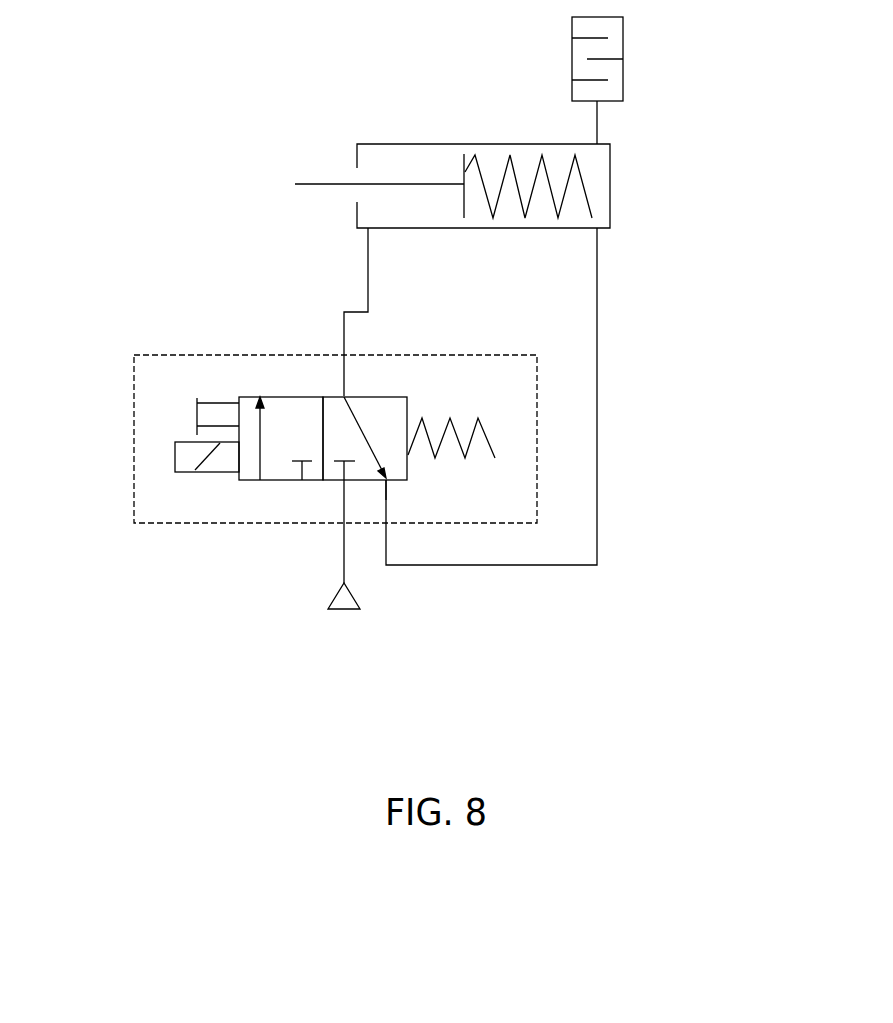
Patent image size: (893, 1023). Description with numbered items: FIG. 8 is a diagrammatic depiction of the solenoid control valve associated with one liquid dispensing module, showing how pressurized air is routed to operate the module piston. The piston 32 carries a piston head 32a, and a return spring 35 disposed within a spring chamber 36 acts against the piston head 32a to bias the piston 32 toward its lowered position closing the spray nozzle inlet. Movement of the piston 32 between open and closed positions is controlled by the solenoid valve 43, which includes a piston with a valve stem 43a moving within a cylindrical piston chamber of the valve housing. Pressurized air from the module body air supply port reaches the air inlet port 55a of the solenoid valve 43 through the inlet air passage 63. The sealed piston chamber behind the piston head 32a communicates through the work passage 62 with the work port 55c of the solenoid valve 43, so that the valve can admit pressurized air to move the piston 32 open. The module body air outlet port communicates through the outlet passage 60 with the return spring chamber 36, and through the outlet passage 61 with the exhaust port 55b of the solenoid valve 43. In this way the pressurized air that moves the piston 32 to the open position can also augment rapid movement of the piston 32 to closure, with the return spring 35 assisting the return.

The piston 32 is at (330, 183).
The piston head 32a is at (462, 167).
The return spring 35 is at (588, 195).
The spring chamber 36 is at (523, 160).
The outlet passage 60 is at (597, 123).
The outlet passage 61 is at (597, 410).
The work passage 62 is at (367, 268).
The solenoid valve 43 is at (187, 353).
The valve stem 43a is at (270, 482).
The air inlet port 55a is at (335, 483).
The exhaust port 55b is at (392, 485).
The work port 55c is at (344, 396).
The inlet air passage 63 is at (344, 553).